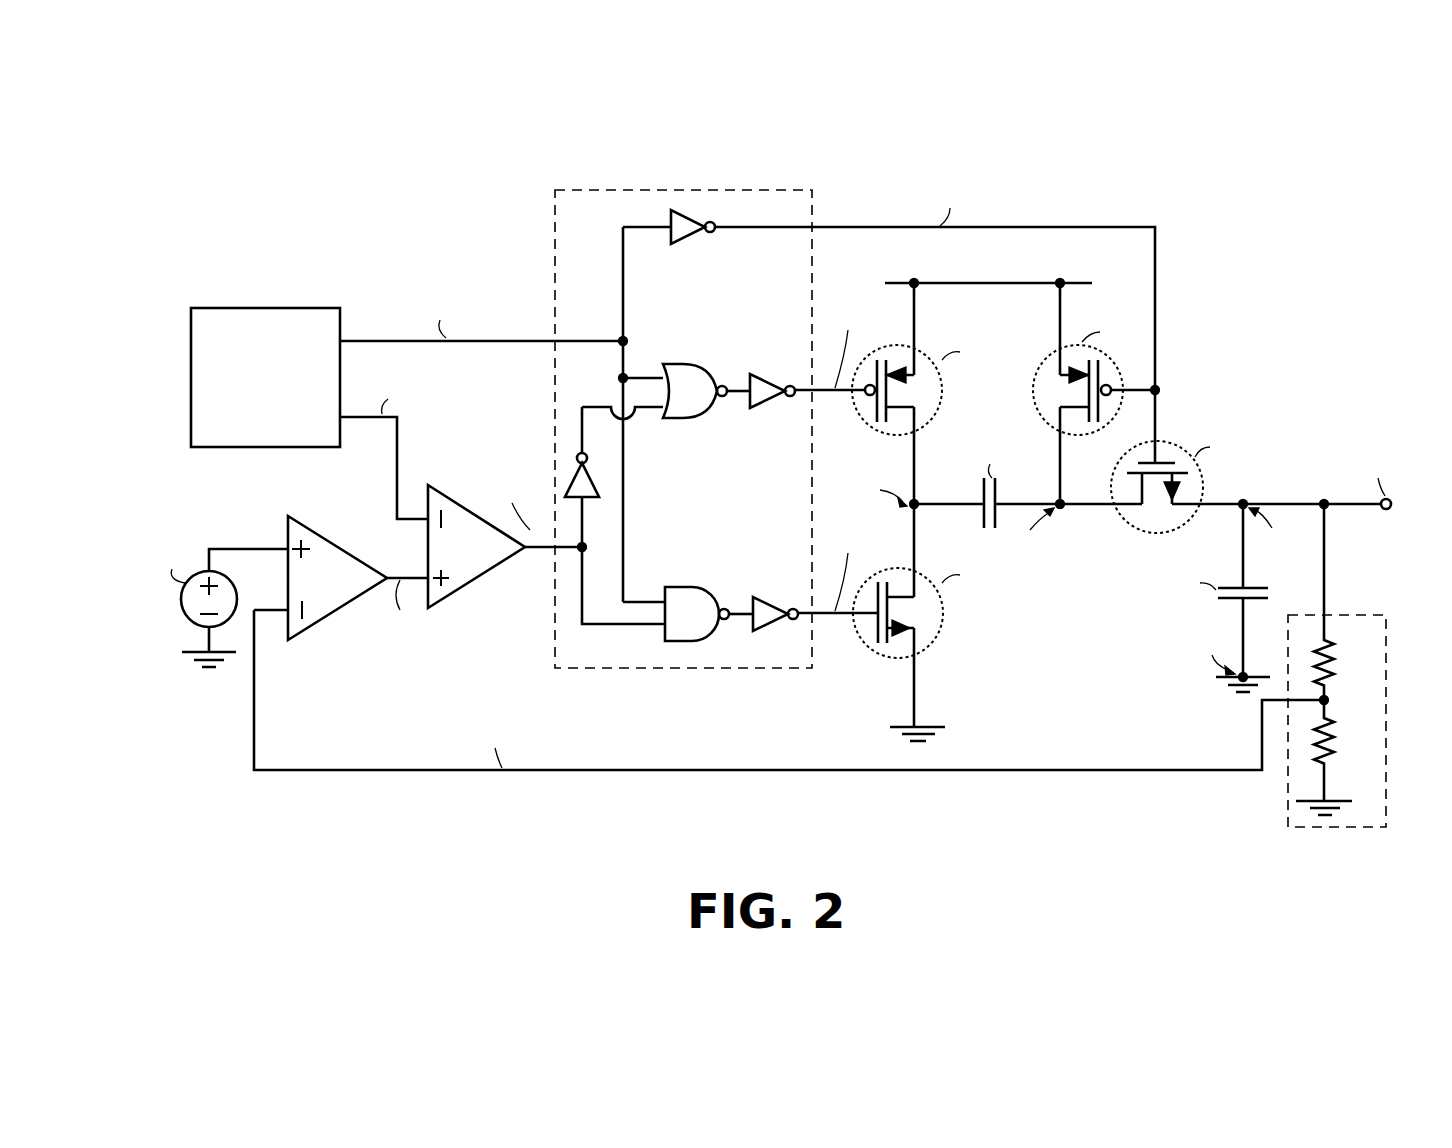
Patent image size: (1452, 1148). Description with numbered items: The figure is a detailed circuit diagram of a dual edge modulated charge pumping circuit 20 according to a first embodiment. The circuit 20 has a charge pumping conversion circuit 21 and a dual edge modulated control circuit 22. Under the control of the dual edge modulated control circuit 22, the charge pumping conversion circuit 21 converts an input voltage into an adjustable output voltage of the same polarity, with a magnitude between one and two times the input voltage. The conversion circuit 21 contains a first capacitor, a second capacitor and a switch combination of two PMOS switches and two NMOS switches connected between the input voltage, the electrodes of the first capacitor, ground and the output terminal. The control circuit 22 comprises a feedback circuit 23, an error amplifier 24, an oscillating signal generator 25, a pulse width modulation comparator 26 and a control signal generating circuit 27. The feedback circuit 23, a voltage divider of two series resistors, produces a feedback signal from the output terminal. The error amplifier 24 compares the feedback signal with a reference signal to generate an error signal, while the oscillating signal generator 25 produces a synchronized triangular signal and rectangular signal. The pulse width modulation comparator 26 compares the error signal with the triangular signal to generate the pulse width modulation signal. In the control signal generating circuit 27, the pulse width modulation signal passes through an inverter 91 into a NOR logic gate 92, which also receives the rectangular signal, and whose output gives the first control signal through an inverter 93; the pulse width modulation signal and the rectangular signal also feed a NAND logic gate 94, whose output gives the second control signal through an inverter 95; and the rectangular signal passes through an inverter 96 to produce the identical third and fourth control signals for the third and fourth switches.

The dual edge modulated charge pumping circuit 20 is at (1262, 236).
The charge pumping conversion circuit 21 is at (1083, 613).
The dual edge modulated control circuit 22 is at (428, 252).
The feedback circuit 23 is at (1370, 615).
The error amplifier 24 is at (312, 628).
The oscillating signal generator 25 is at (237, 306).
The pulse width modulation comparator 26 is at (476, 591).
The control signal generating circuit 27 is at (672, 190).
The inverter 91 is at (591, 498).
The NOR logic gate 92 is at (683, 419).
The inverter 93 is at (762, 408).
The NAND logic gate 94 is at (688, 587).
The inverter 95 is at (772, 600).
The inverter 96 is at (677, 243).